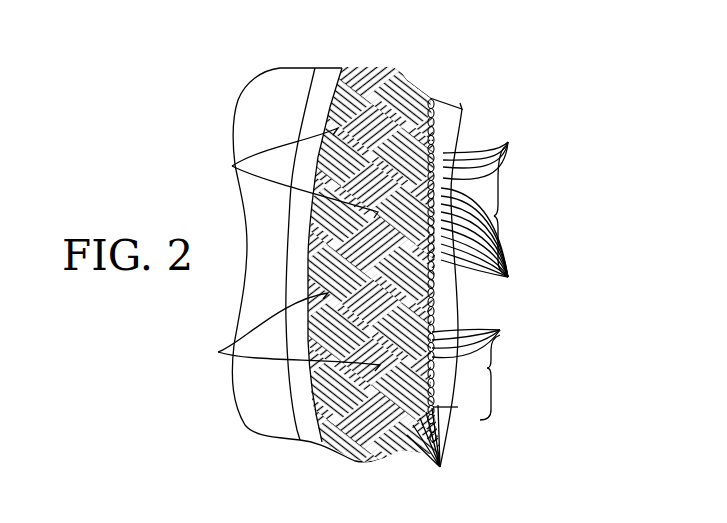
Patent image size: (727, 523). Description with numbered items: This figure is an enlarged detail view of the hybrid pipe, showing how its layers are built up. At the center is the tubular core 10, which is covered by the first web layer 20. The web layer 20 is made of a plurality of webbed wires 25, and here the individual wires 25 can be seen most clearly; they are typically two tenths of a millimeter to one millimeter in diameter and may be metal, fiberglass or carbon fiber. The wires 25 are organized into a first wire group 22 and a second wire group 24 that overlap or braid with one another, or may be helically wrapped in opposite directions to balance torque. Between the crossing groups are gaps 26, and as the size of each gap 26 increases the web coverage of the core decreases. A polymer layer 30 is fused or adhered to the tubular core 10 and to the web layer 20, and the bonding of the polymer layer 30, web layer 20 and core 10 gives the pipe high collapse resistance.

The tubular core 10 is at (457, 104).
The first web layer 20 is at (410, 86).
The first wire group 22 is at (494, 216).
The second wire group 24 is at (487, 368).
The wires 25 is at (471, 299).
The gap 26 is at (286, 249).
The polymer layer 30 is at (290, 68).